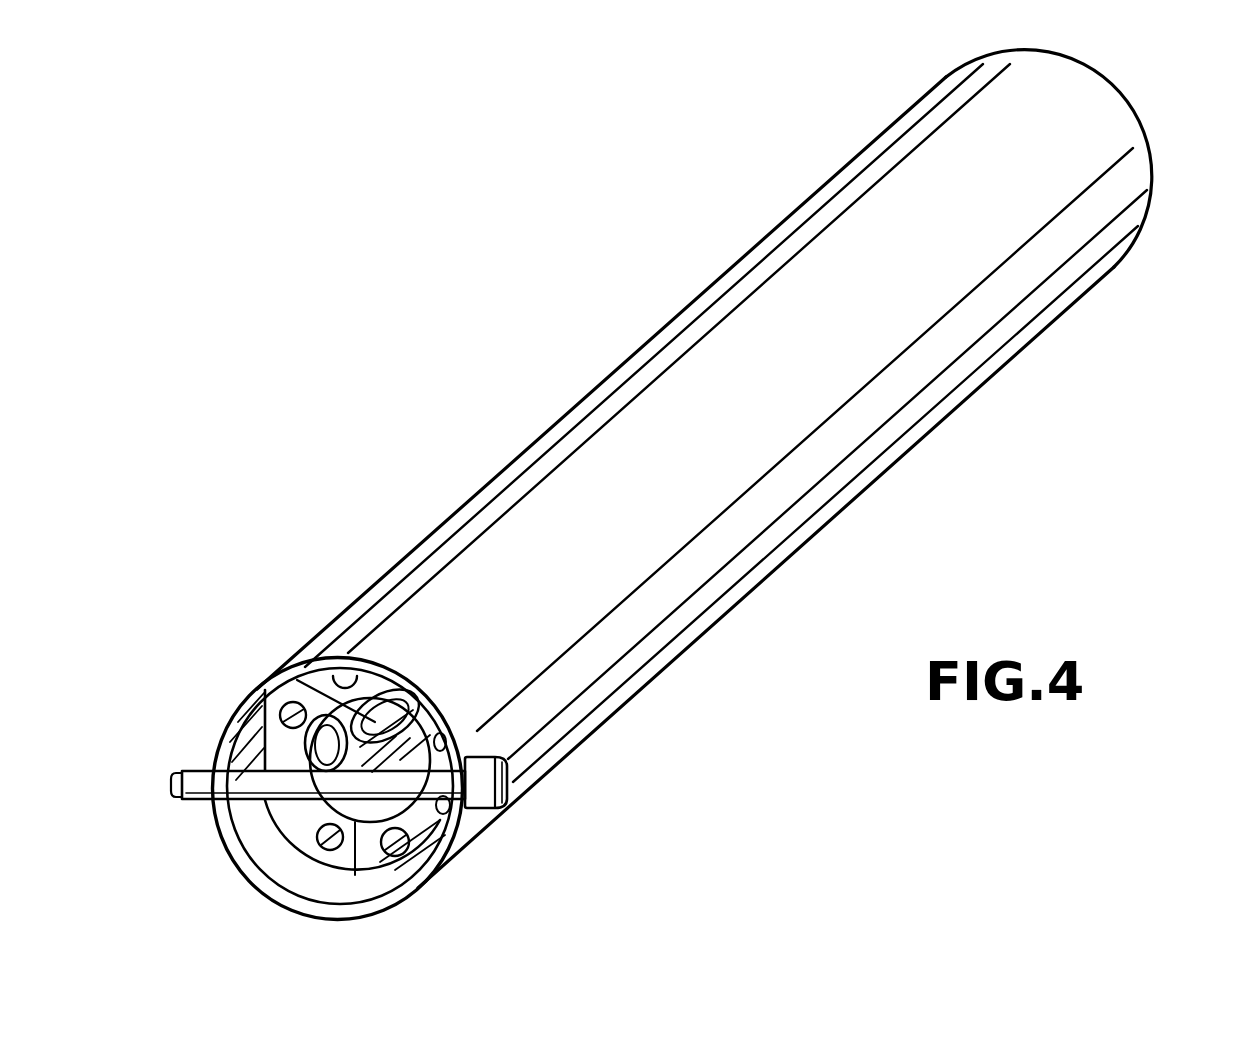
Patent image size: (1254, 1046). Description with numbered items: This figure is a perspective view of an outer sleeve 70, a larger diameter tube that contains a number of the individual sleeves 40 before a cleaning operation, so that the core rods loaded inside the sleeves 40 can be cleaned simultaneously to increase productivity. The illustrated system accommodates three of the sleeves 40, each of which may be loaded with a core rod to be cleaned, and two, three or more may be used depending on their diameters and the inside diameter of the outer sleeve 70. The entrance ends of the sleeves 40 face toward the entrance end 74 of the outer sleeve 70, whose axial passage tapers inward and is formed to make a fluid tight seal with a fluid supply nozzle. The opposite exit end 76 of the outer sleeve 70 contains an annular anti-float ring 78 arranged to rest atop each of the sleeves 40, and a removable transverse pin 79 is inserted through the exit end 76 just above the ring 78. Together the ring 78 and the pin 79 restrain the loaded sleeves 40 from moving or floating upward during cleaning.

The outer sleeve 70 is at (573, 757).
The entrance end 74 is at (1130, 252).
The exit end 76 is at (362, 643).
The annular anti-float ring 78 is at (300, 820).
The sleeve 40 is at (297, 680).
The removable transverse pin 79 is at (493, 810).